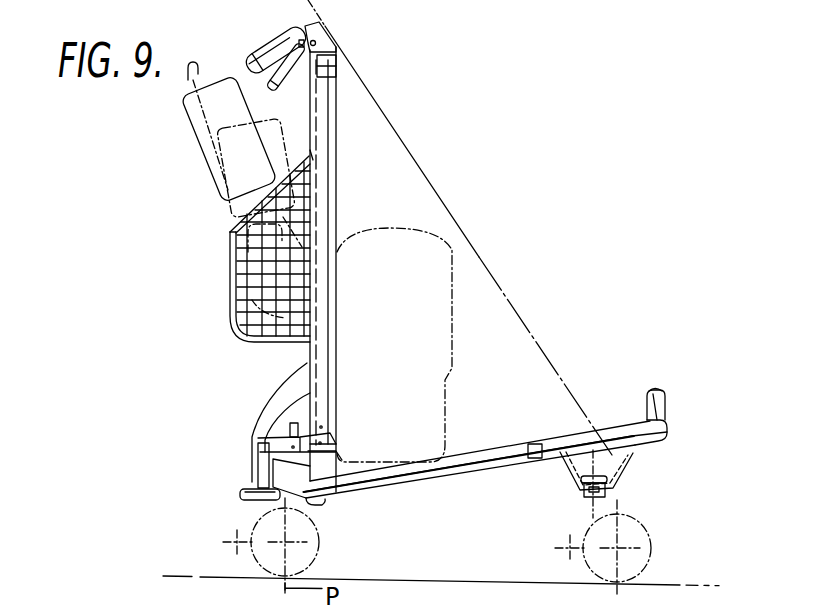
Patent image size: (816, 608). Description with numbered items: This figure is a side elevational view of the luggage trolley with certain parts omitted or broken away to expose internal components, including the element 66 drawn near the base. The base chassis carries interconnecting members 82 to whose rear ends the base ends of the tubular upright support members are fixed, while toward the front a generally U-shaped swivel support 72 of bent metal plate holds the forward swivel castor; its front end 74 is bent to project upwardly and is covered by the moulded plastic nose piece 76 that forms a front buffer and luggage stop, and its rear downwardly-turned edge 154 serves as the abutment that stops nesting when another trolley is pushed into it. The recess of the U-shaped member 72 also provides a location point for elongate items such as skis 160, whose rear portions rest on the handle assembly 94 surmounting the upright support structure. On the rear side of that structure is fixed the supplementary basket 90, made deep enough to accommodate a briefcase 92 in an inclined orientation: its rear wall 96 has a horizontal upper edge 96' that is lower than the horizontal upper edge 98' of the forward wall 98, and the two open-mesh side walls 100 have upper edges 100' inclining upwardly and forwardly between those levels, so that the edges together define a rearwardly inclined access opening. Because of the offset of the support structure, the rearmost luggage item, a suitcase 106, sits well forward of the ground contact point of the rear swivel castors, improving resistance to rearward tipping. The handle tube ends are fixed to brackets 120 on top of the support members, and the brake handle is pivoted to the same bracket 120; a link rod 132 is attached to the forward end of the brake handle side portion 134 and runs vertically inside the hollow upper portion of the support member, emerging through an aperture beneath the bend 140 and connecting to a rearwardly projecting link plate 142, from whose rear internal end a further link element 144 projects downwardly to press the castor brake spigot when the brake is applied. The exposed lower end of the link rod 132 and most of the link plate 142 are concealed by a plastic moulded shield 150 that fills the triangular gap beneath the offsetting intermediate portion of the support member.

The base frame 66 is at (349, 509).
The swivel support 72 is at (618, 484).
The front end of the swivel support 74 is at (664, 407).
The nose piece 76 is at (656, 390).
The interconnecting member 82 is at (278, 498).
The basket 90 is at (222, 298).
The briefcase 92 is at (222, 146).
The handle assembly 94 is at (328, 20).
The rear wall 96 is at (238, 249).
The upper edge of the rear wall 96' is at (199, 217).
The forward wall 98 is at (349, 269).
The upper edge of the forward wall 98' is at (388, 139).
The side wall 100 is at (238, 296).
The upper edge of the side wall 100' is at (211, 168).
The suitcase 106 is at (400, 405).
The bracket 120 is at (330, 33).
The link rod 132 is at (323, 302).
The side portion of the brake handle 134 is at (294, 73).
The bend 140 is at (297, 366).
The link plate 142 is at (296, 428).
The link element 144 is at (258, 467).
The shield 150 is at (637, 456).
The rear downwardly-turned edge 154 is at (522, 465).
The skis 160 is at (479, 256).